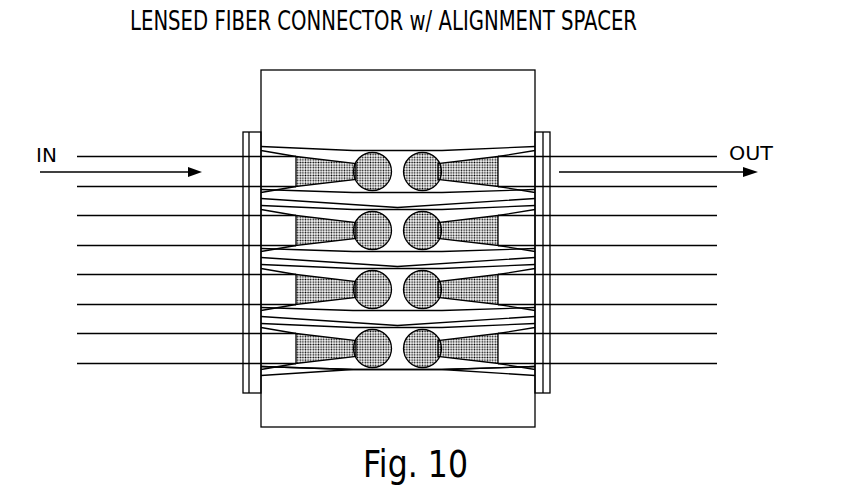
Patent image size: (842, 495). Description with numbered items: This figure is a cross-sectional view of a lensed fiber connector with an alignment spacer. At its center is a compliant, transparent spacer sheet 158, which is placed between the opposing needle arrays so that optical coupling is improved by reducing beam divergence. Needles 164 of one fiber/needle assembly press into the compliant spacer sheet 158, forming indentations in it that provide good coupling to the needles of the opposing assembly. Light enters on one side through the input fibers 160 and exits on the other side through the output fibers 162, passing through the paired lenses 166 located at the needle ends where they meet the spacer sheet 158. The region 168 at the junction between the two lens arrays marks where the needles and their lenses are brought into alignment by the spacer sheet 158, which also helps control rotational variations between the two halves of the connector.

The spacer sheet 158 is at (535, 93).
The input optical fibers 160 is at (168, 165).
The output optical fibers 162 is at (617, 164).
The needles 164 is at (294, 224).
The ball lenses 166 is at (342, 222).
The alignment spacer 168 is at (421, 370).